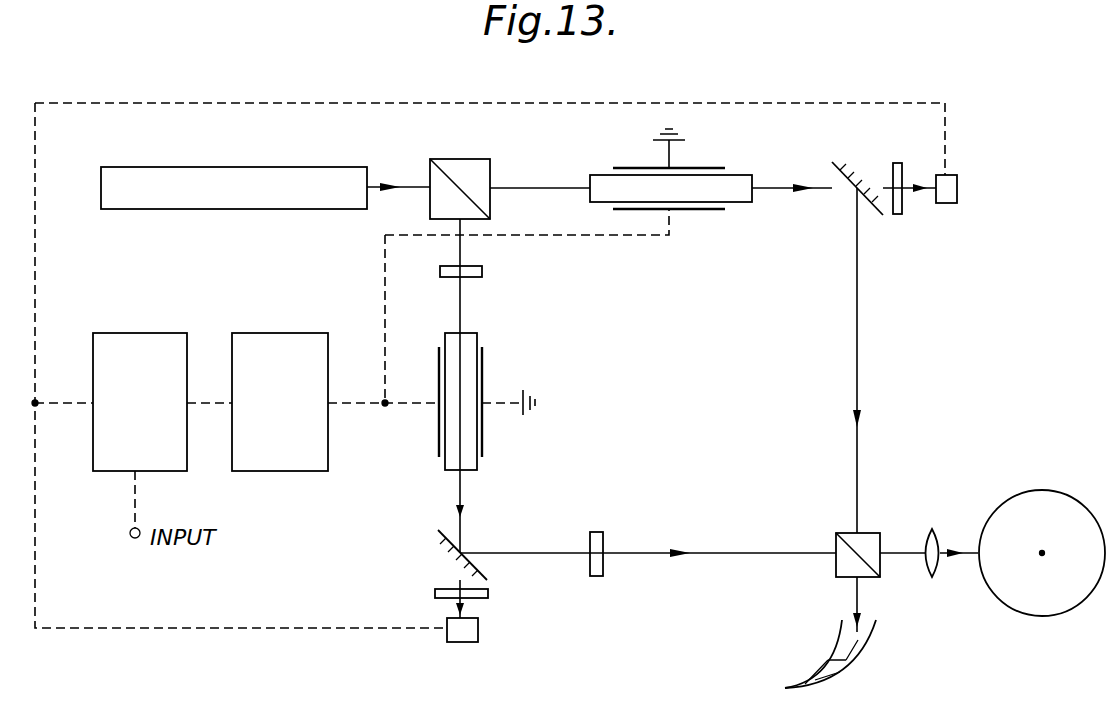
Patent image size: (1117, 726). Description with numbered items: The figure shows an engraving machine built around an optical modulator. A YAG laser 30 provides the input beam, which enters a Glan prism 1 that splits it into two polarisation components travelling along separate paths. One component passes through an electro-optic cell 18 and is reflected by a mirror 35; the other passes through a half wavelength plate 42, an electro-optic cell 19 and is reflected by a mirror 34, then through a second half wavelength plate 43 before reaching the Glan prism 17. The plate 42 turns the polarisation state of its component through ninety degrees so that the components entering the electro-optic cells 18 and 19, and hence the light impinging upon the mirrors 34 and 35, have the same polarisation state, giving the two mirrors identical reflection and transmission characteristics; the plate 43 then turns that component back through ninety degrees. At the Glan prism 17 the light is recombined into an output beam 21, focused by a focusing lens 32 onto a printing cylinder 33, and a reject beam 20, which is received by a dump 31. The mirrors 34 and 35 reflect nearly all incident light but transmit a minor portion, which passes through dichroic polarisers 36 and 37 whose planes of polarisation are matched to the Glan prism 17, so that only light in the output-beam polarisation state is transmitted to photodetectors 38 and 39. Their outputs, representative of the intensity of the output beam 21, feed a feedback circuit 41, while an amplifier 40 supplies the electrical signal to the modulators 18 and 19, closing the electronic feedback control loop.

The Glan prism 1 is at (483, 169).
The Glan prism 17 is at (850, 534).
The electro-optic cell 18 is at (735, 178).
The electro-optic cell 19 is at (470, 341).
The reject beam 20 is at (860, 598).
The output beam 21 is at (903, 550).
The YAG laser 30 is at (208, 198).
The dump 31 is at (870, 642).
The focusing lens 32 is at (938, 536).
The printing cylinder 33 is at (1040, 495).
The mirror 34 is at (438, 533).
The mirror 35 is at (840, 163).
The dichroic polariser 36 is at (490, 594).
The dichroic polariser 37 is at (902, 165).
The photodetector 38 is at (478, 628).
The photodetector 39 is at (957, 190).
The amplifier 40 is at (280, 338).
The feedback circuit 41 is at (140, 338).
The half wavelength plate 42 is at (482, 270).
The half wavelength plate 43 is at (600, 540).